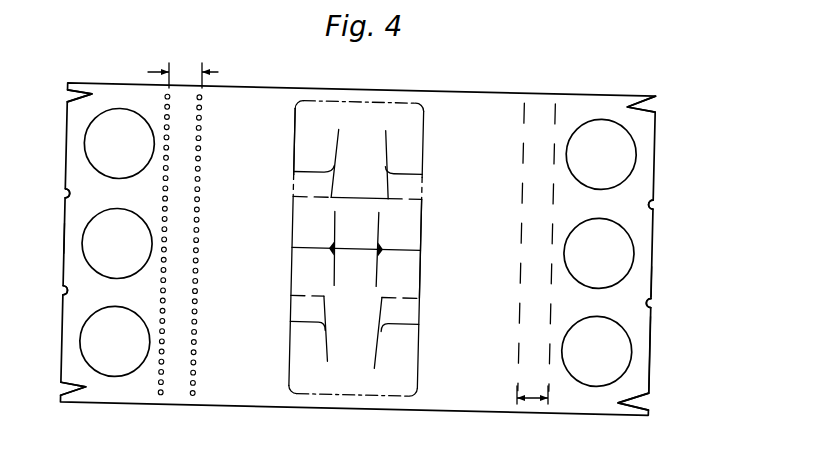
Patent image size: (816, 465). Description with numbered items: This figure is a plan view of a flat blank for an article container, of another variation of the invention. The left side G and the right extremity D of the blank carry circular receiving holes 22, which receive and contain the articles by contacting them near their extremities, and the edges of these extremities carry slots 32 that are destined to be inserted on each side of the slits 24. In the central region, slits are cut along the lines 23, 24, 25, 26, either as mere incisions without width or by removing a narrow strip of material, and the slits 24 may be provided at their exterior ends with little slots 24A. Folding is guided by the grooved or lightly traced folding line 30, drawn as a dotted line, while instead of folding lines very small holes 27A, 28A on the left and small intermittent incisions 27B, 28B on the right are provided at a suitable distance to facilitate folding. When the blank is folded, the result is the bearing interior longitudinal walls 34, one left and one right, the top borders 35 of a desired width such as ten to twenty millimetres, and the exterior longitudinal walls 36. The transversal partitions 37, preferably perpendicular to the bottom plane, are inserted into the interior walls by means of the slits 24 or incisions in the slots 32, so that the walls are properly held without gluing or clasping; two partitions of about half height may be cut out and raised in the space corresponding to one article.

The receiving holes 22 is at (132, 172).
The slit line 23 is at (357, 198).
The slits 24 is at (381, 148).
The little slots 24A is at (381, 250).
The slit line 25 is at (312, 172).
The slit line 26 is at (295, 136).
The very small holes 27A is at (167, 153).
The small intermittent incisions 27B is at (523, 148).
The very small holes 28A is at (192, 382).
The small intermittent incisions 28B is at (555, 150).
The folding line 30 is at (428, 96).
The slots 32 is at (68, 194).
The bearing interior longitudinal walls 34 is at (640, 364).
The top borders 35 is at (524, 430).
The exterior longitudinal walls 36 is at (465, 393).
The transversal partitions 37 is at (368, 112).
The left side G is at (64, 241).
The right extremity D is at (644, 280).